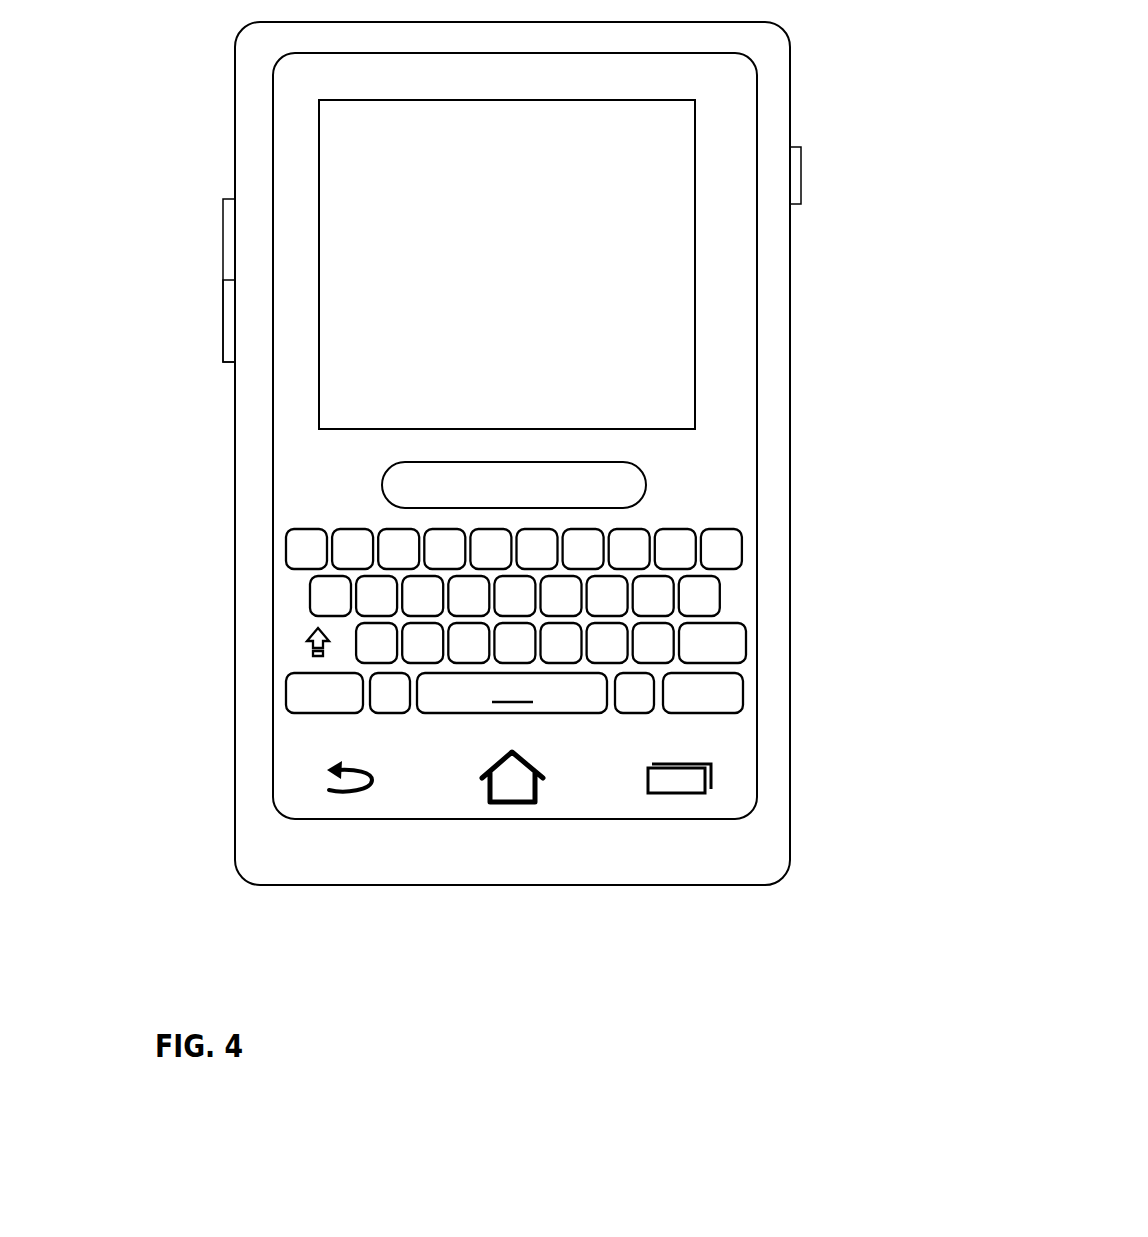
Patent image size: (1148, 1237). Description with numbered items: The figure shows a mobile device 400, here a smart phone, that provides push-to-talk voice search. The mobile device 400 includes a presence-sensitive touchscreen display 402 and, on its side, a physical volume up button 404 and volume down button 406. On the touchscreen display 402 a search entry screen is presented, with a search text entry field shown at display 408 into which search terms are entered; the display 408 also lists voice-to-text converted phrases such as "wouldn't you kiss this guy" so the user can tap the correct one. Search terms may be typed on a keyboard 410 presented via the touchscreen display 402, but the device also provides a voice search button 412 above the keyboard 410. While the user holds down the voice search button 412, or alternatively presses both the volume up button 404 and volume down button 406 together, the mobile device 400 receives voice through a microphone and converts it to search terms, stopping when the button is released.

The mobile device 400 is at (790, 80).
The presence-sensitive touchscreen display 402 is at (757, 124).
The volume up button 404 is at (223, 220).
The volume down button 406 is at (223, 328).
The display of search text entry field 408 is at (695, 181).
The keyboard 410 is at (727, 594).
The voice search button 412 is at (646, 478).